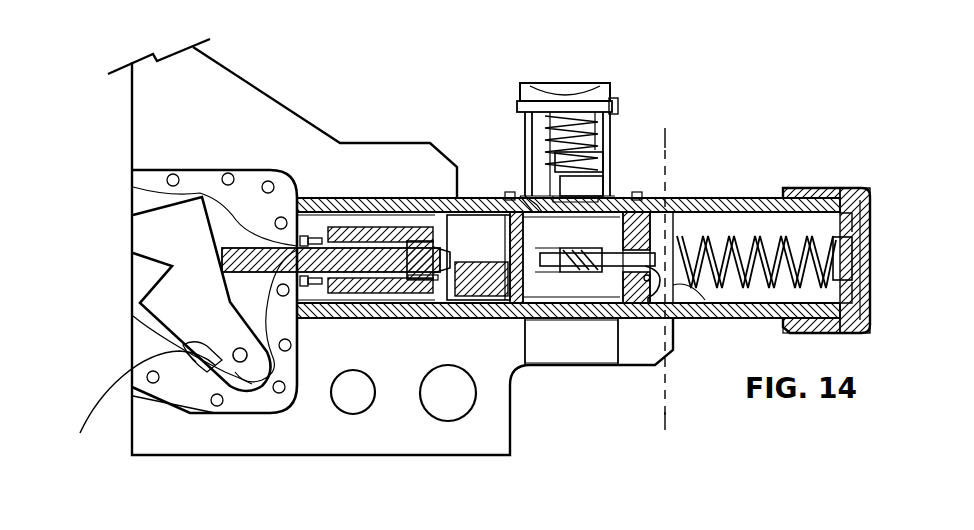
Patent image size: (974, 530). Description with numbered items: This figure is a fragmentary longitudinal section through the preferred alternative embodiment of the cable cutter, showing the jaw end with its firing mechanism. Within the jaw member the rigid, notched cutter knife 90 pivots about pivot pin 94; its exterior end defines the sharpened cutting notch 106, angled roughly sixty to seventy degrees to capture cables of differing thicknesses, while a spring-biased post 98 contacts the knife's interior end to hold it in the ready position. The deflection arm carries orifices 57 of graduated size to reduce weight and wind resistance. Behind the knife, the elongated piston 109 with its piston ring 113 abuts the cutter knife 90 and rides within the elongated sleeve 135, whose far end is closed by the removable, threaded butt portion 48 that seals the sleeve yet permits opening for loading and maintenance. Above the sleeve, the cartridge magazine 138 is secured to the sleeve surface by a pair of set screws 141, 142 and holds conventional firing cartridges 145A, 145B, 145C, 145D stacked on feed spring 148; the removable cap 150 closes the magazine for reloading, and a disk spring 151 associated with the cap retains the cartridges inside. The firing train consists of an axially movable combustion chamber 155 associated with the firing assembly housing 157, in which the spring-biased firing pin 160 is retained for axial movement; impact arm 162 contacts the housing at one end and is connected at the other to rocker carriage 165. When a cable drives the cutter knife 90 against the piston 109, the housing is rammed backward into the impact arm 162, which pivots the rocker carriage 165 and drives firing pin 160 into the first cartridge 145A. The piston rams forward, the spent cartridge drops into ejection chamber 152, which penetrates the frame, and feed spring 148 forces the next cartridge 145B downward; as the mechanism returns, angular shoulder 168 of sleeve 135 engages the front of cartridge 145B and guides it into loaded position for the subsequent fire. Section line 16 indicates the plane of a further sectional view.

The section line 16 is at (668, 137).
The butt portion 48 is at (855, 190).
The orifices 57 is at (376, 391).
The cutter knife 90 is at (205, 293).
The pivot pin 94 is at (236, 356).
The post 98 is at (138, 408).
The cutting notch 106 is at (150, 277).
The piston 109 is at (310, 262).
The piston ring 113 is at (425, 262).
The sleeve 135 is at (900, 280).
The cartridge magazine 138 is at (622, 122).
The set screw 141 is at (514, 195).
The set screw 142 is at (658, 198).
The cartridge 145A is at (505, 260).
The cartridge 145B is at (600, 190).
The cartridge 145C is at (603, 160).
The cartridge 145D is at (556, 160).
The feed spring 148 is at (556, 137).
The cap 150 is at (506, 104).
The disk spring 151 is at (565, 82).
The ejection chamber 152 is at (593, 348).
The combustion chamber 155 is at (415, 280).
The firing assembly housing 157 is at (568, 242).
The firing pin 160 is at (600, 258).
The impact arm 162 is at (612, 290).
The rocker carriage 165 is at (712, 300).
The angular shoulder 168 is at (460, 213).